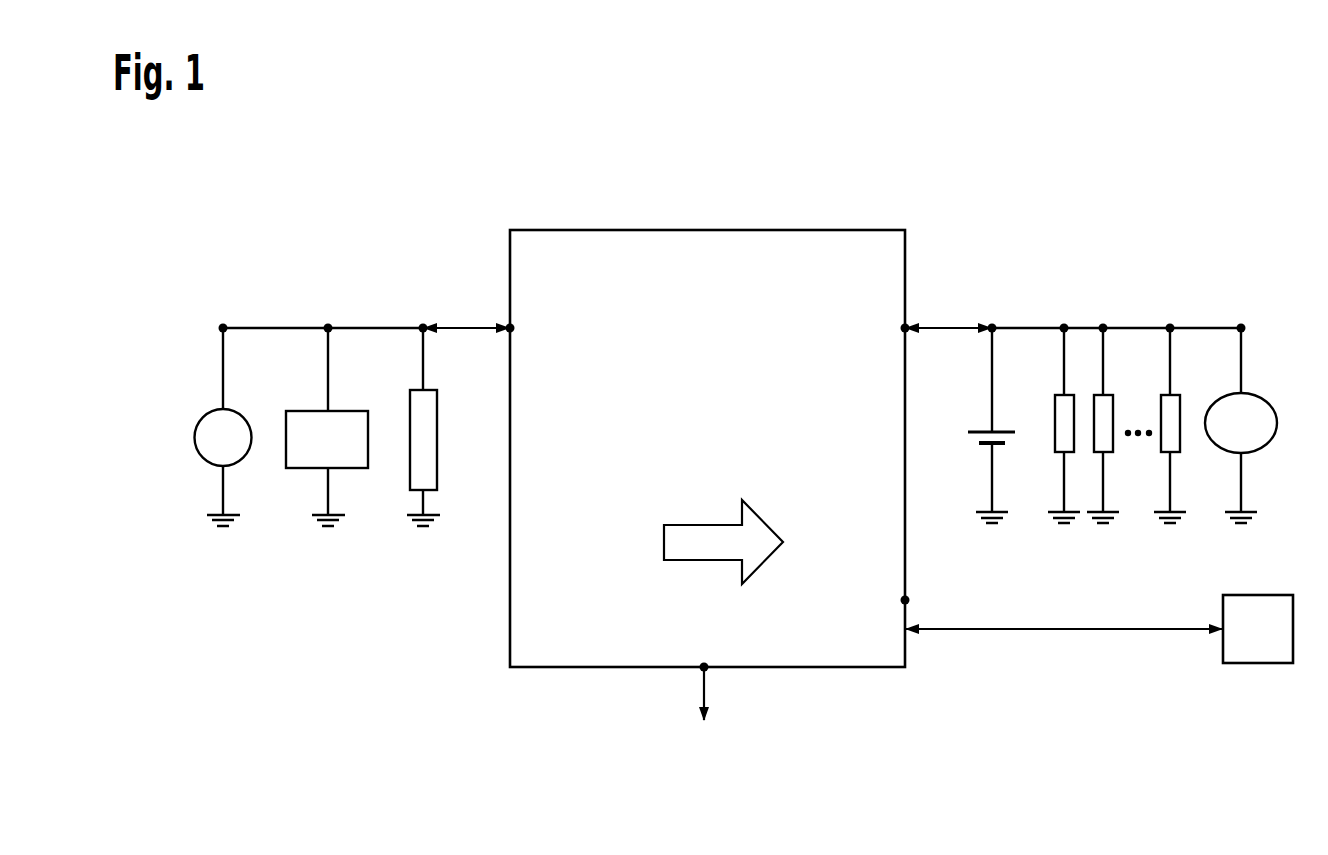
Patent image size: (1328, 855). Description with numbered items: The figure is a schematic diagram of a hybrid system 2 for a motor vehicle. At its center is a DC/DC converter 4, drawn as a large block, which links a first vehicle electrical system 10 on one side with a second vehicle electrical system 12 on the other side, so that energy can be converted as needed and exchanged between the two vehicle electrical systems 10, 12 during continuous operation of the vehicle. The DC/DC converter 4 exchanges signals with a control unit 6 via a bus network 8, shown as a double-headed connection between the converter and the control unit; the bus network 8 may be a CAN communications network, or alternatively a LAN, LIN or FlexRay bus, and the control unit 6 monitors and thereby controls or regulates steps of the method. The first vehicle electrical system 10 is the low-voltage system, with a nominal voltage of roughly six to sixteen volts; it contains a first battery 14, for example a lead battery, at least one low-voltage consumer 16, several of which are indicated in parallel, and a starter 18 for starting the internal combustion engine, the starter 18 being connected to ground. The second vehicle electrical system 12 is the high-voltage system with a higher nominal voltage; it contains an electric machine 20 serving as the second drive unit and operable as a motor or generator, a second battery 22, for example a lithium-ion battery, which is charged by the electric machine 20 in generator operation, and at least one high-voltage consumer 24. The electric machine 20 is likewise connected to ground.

The system 2 is at (552, 742).
The DC/DC converter 4 is at (723, 272).
The control unit 6 is at (1257, 645).
The bus network 8 is at (1072, 640).
The first vehicle electrical system 10 is at (1170, 277).
The second vehicle electrical system 12 is at (333, 280).
The first battery 14 is at (968, 462).
The consumer 16 is at (1040, 392).
The starter 18 is at (1265, 390).
The electric machine 20 is at (185, 412).
The second battery 22 is at (296, 400).
The consumer 24 is at (440, 440).